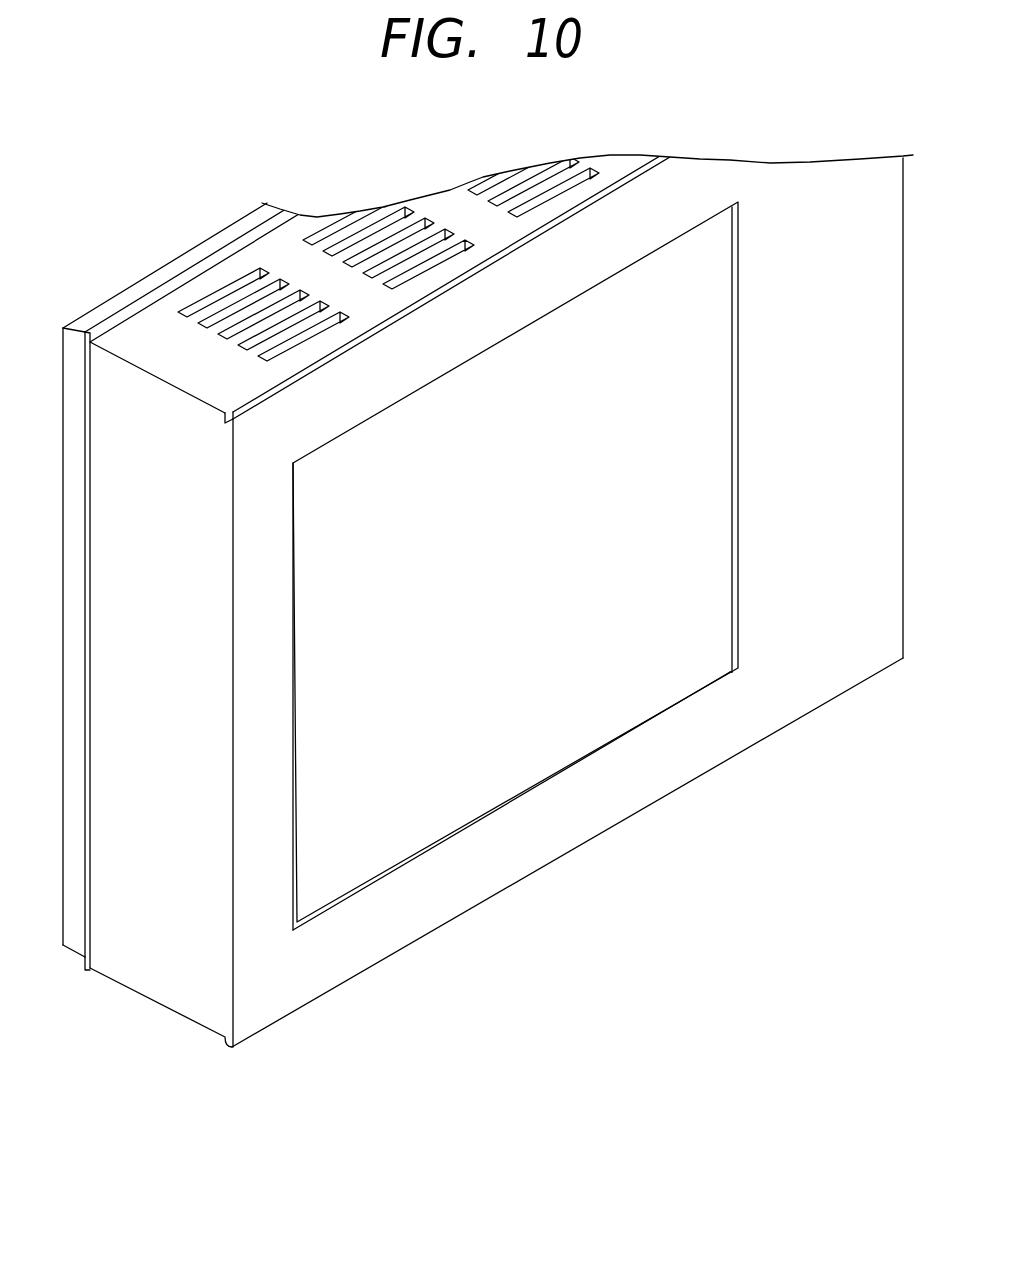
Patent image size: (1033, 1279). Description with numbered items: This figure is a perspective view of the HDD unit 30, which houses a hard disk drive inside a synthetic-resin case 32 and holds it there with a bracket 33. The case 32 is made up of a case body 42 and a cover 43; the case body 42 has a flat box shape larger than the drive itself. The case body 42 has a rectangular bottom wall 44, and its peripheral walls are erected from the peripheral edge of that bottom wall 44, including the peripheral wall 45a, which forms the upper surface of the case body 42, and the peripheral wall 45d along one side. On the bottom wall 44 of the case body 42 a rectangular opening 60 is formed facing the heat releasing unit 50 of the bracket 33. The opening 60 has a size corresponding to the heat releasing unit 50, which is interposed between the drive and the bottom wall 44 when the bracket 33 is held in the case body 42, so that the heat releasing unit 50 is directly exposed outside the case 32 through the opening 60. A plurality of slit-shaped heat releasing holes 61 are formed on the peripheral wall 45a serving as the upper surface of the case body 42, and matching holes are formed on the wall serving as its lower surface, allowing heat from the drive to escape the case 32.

The HDD unit 30 is at (740, 152).
The case 32 is at (148, 243).
The bracket 33 is at (305, 661).
The case body 42 is at (120, 362).
The cover 43 is at (84, 322).
The bottom wall 44 is at (856, 673).
The peripheral wall 45a is at (497, 236).
The peripheral wall 45d is at (150, 982).
The heat releasing unit 50 is at (718, 440).
The opening 60 is at (727, 648).
The heat releasing holes 61 is at (304, 291).